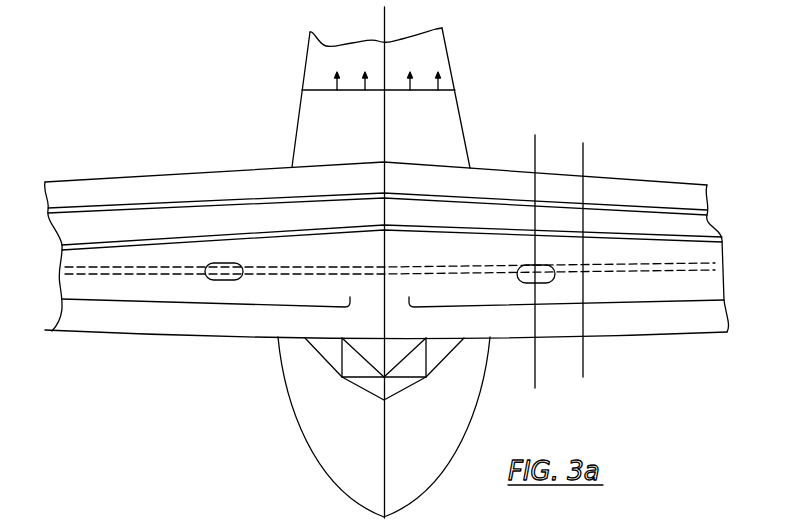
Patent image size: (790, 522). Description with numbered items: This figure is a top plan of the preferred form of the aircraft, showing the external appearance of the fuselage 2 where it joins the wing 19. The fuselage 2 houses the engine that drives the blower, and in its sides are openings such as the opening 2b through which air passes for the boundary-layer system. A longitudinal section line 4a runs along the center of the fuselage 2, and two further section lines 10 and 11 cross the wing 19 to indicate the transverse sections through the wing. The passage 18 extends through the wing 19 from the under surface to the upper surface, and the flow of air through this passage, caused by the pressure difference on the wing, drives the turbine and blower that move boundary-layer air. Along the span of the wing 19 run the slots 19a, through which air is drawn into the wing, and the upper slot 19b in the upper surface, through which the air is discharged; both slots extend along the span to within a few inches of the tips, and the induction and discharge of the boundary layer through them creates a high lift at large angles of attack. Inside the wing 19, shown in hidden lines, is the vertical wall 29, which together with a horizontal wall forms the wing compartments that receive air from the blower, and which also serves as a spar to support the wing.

The fuselage 2 is at (296, 118).
The opening in fuselage side 2b is at (423, 90).
The longitudinal section line 4a is at (384, 7).
The section line 10 is at (522, 388).
The section line 11 is at (572, 377).
The passage 18 is at (226, 270).
The wing 19 is at (658, 334).
The openings or slots 19a is at (617, 236).
The upper slot 19b is at (197, 303).
The vertical wall 29 is at (128, 271).